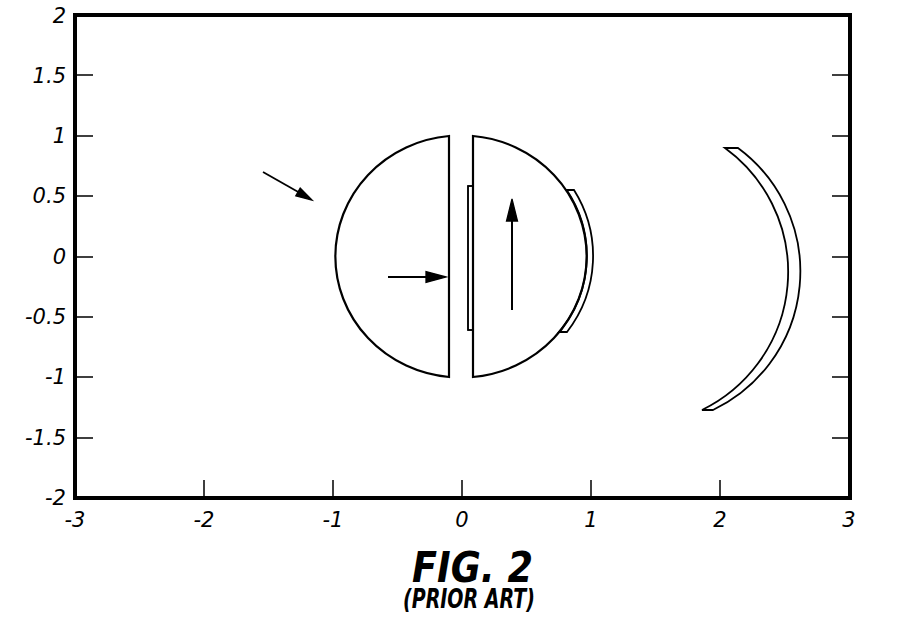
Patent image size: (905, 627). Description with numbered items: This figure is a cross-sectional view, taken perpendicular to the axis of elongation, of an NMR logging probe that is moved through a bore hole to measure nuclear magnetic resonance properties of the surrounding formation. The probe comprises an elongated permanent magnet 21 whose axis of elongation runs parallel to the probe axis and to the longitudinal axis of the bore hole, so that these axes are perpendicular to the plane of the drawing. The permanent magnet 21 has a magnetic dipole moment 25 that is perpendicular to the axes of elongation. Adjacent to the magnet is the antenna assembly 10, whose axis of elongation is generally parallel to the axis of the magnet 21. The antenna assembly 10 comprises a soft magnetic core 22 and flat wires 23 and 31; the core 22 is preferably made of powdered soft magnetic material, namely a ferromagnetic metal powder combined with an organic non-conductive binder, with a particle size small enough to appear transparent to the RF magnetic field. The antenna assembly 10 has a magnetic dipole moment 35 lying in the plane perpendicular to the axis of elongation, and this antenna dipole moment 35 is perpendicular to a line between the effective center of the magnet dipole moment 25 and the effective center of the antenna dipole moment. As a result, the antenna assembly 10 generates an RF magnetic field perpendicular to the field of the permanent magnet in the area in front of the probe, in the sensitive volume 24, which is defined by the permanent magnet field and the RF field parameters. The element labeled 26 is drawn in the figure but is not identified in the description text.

The antenna assembly 10 is at (472, 313).
The elongated permanent magnet 21 is at (418, 153).
The soft magnetic core 22 is at (502, 155).
The flat wire 23 is at (470, 332).
The sensitive volume 24 is at (750, 160).
The magnetic dipole moment 25 is at (417, 282).
The incoming light beam 26 is at (272, 175).
The flat wire 31 is at (583, 215).
The antenna magnetic dipole moment 35 is at (513, 262).